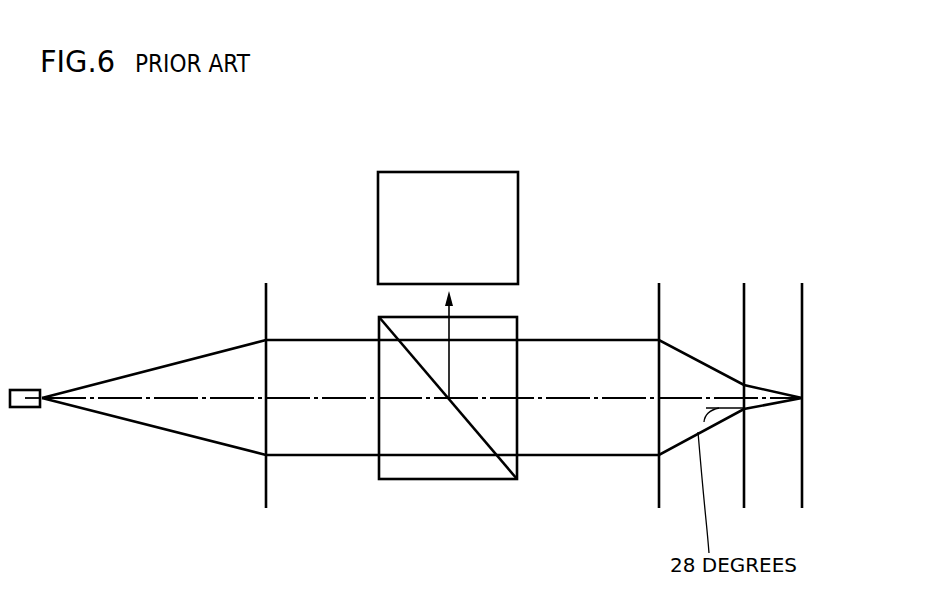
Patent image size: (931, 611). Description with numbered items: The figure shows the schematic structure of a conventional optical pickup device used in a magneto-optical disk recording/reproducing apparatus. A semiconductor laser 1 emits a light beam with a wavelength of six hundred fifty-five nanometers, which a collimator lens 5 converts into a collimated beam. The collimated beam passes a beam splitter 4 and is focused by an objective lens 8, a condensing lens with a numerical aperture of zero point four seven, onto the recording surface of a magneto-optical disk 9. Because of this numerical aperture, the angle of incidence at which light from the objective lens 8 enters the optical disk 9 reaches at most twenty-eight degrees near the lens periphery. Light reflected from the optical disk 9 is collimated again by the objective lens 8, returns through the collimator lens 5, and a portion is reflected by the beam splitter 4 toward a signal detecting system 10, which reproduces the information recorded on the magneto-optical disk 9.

The semiconductor laser 1 is at (24, 408).
The collimator lens 5 is at (266, 498).
The beam splitter 4 is at (452, 480).
The signal detecting system 10 is at (518, 222).
The objective lens 8 is at (659, 500).
The magneto-optical disk 9 is at (787, 498).